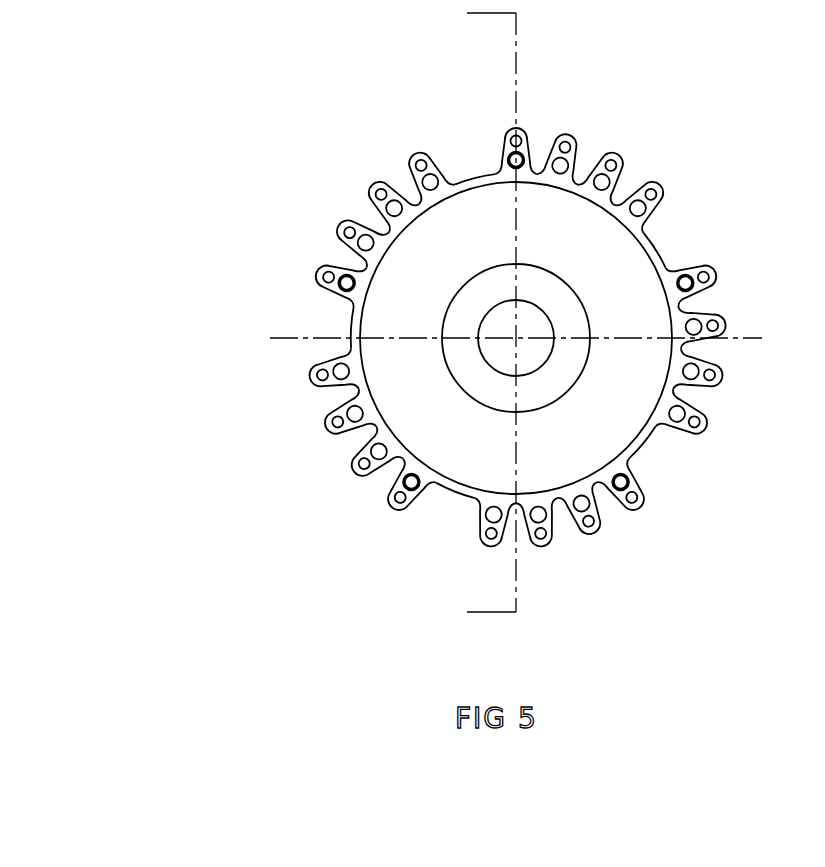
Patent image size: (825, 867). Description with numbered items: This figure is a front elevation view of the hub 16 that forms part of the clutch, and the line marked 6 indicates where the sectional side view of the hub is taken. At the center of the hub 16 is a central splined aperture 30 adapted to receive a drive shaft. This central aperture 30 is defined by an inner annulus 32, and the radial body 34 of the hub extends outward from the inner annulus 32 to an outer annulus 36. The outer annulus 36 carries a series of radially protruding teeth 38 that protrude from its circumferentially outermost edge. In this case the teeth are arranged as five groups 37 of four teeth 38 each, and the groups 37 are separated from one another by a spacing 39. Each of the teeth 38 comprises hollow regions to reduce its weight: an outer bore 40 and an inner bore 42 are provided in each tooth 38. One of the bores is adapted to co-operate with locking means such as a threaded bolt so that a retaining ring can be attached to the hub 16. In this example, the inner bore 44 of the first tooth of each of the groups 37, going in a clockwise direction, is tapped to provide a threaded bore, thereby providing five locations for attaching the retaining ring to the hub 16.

The hub 16 is at (684, 474).
The central splined aperture 30 is at (540, 313).
The inner annulus 32 is at (465, 310).
The radial body 34 is at (443, 237).
The outer annulus 36 is at (633, 503).
The group of teeth 37 is at (308, 361).
The tooth 38 is at (683, 266).
The spacing 39 is at (478, 176).
The outer bore 40 is at (345, 233).
The inner bore 42 is at (362, 243).
The inner bore 44 is at (424, 489).
The section line 6- 6 is at (478, 313).